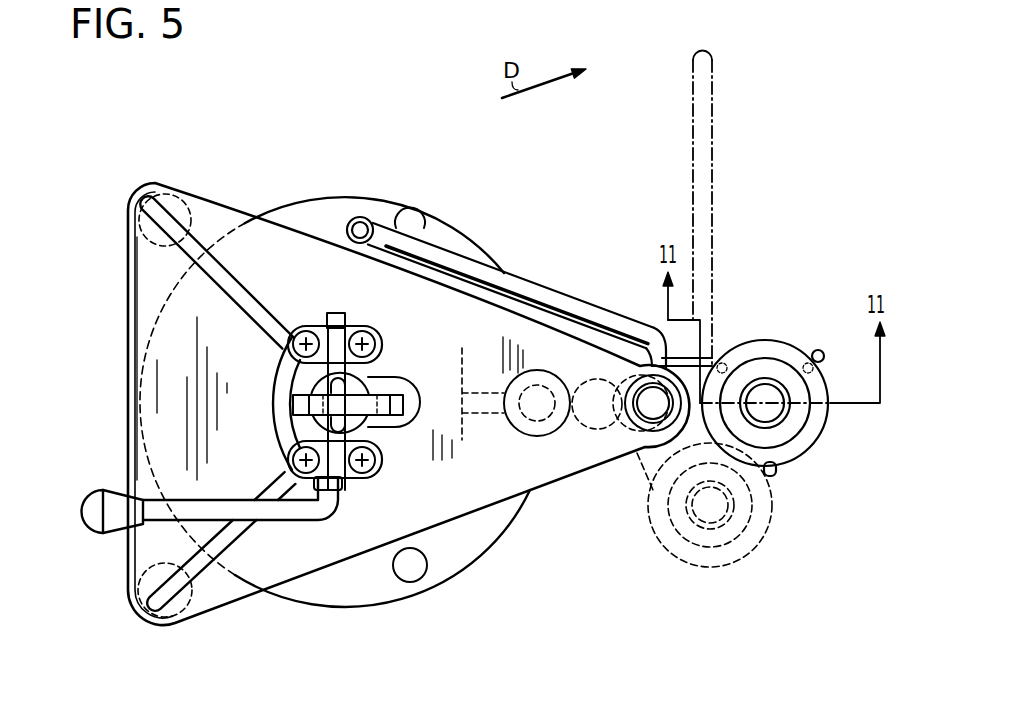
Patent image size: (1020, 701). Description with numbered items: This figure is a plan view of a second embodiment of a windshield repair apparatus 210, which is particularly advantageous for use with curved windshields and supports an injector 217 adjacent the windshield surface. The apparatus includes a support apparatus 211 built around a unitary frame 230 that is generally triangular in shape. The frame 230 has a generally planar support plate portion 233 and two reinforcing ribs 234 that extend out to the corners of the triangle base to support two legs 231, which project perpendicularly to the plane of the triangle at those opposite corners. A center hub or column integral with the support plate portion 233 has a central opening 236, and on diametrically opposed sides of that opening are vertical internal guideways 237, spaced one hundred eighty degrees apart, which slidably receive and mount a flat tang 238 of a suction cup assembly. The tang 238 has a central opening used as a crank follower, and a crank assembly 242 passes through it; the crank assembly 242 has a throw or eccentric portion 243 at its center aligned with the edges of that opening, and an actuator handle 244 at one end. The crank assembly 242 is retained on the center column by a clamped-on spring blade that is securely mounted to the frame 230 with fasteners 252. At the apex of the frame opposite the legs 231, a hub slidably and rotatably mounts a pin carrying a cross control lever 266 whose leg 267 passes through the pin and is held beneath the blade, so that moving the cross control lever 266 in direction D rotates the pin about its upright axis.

The windshield repair apparatus 210 is at (112, 330).
The support apparatus 211 is at (222, 205).
The injector 217 is at (802, 436).
The unitary frame 230 is at (228, 607).
The legs 231 is at (197, 195).
The support plate portion 233 is at (575, 472).
The reinforcing ribs 234 is at (224, 262).
The central opening 236 is at (375, 458).
The vertical internal guideways 237 is at (292, 392).
The flat tang 238 is at (378, 360).
The crank assembly 242 is at (330, 312).
The eccentric portion 243 is at (293, 410).
The actuator handle 244 is at (276, 521).
The fasteners 252 is at (332, 489).
The cross control lever 266 is at (548, 288).
The leg 267 is at (660, 337).